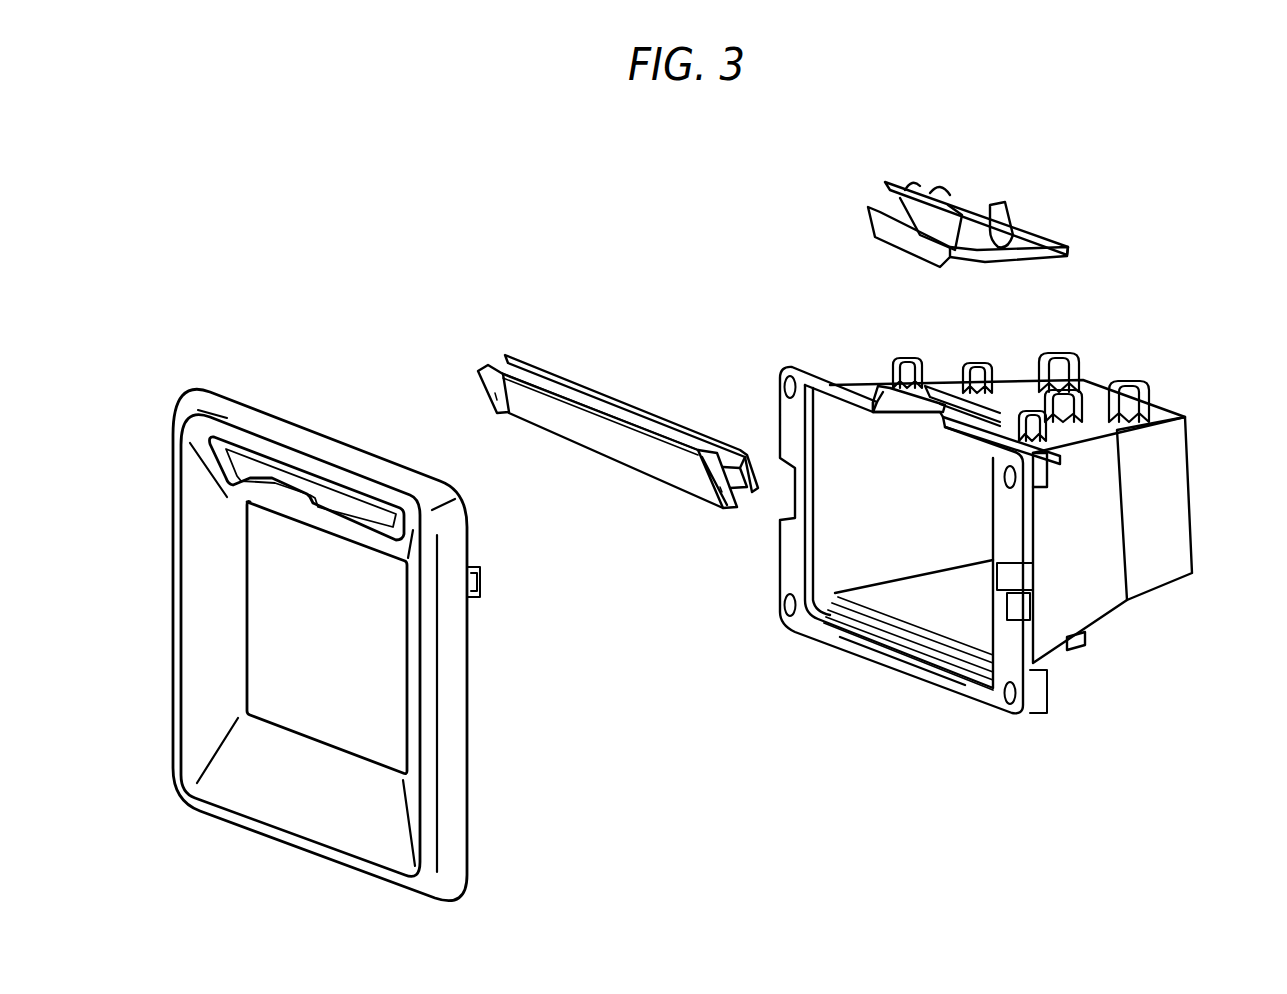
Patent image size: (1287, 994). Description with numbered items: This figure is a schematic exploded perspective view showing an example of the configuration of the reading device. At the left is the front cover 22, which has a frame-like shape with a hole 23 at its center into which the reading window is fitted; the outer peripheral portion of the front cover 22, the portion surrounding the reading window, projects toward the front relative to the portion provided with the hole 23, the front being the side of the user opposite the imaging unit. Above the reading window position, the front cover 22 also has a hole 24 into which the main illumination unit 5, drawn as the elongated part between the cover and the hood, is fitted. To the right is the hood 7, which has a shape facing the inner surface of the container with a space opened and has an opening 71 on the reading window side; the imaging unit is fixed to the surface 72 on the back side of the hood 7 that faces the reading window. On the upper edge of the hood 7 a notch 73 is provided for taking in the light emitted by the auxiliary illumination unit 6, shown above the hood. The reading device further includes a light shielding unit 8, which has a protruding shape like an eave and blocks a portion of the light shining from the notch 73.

The main illumination unit 5 is at (641, 356).
The auxiliary illumination unit 6 is at (978, 157).
The hood 7 is at (988, 528).
The light shielding unit 8 is at (957, 417).
The front cover 22 is at (195, 547).
The hole 23 is at (250, 645).
The hole 24 is at (227, 457).
The opening 71 is at (845, 542).
The surface 72 is at (1192, 500).
The notch 73 is at (913, 420).